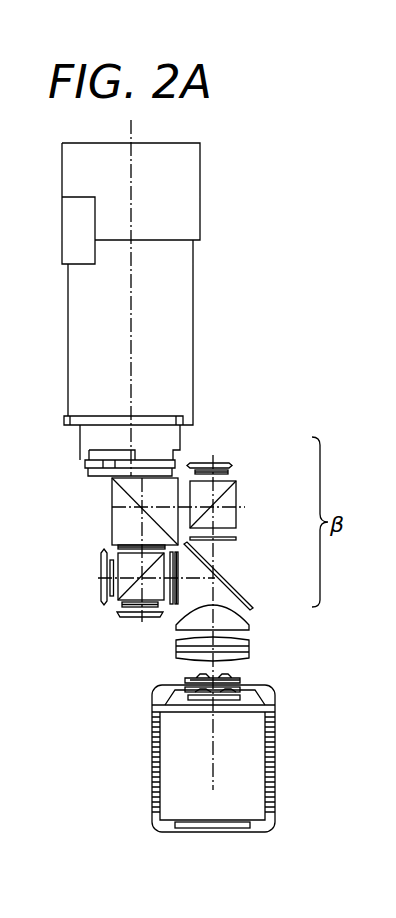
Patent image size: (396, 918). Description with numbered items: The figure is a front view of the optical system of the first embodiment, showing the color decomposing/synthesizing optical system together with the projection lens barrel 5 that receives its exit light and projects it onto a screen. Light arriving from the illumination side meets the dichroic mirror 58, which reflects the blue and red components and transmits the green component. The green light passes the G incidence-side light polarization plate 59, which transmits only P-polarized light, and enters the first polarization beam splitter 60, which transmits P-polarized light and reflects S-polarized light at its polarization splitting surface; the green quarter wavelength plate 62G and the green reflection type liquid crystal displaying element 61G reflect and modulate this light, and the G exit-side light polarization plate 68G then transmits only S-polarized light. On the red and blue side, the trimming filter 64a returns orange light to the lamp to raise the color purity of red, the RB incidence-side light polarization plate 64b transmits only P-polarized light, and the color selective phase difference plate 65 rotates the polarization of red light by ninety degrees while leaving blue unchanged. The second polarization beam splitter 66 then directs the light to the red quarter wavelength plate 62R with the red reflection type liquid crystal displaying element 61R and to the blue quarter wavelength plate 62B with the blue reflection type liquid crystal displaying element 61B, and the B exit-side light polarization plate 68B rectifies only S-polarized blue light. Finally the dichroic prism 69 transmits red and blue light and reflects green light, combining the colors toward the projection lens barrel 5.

The projection lens barrel 5 is at (190, 328).
The dichroic prism 69 is at (112, 487).
The B exit-side light polarization plate 68B is at (133, 541).
The second polarization beam splitter 66 is at (110, 550).
The color selective phase difference plate 65 is at (158, 590).
The blue reflection type liquid crystal displaying element 61B is at (128, 559).
The blue quarter wavelength plate 62B is at (110, 590).
The red quarter wavelength plate 62R is at (122, 605).
The red reflection type liquid crystal displaying element 61R is at (117, 617).
The trimming filter 64a is at (183, 600).
The RB incidence-side light polarization plate 64b is at (172, 604).
The first polarization beam splitter 60 is at (236, 503).
The green reflection type liquid crystal displaying element 61G is at (232, 466).
The green quarter wavelength plate 62G is at (230, 474).
The G incidence-side light polarization plate 59 is at (236, 538).
The G exit-side light polarization plate 68G is at (180, 492).
The dichroic mirror 58 is at (250, 606).